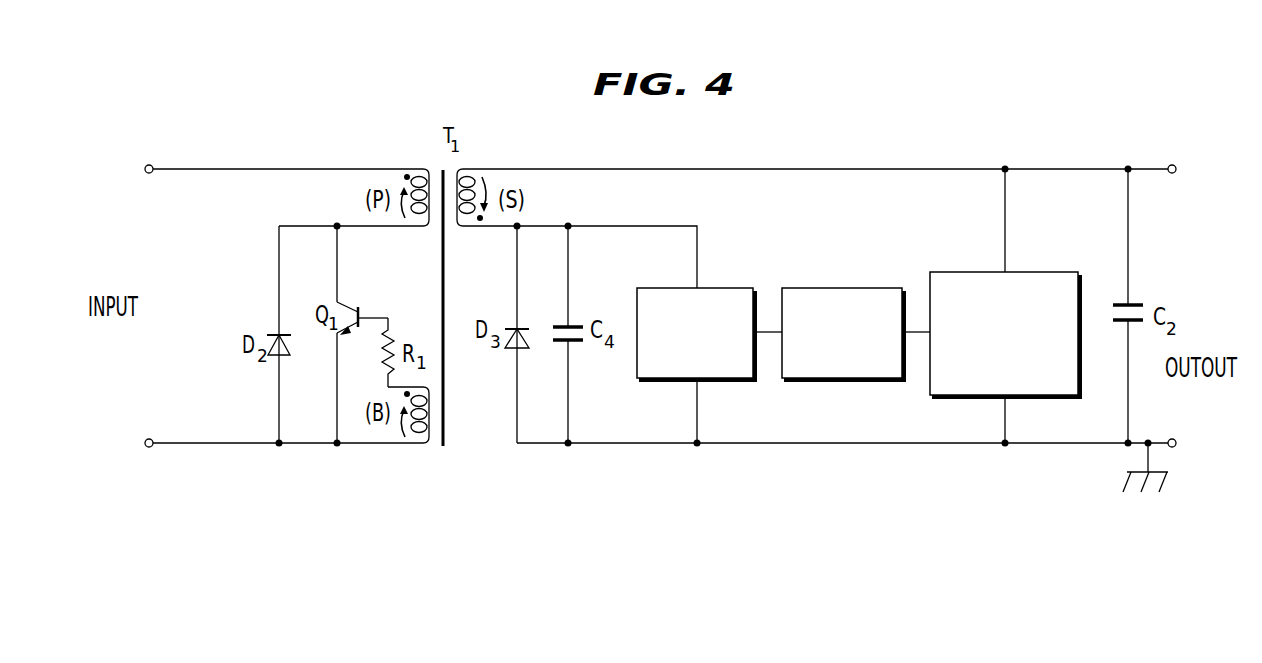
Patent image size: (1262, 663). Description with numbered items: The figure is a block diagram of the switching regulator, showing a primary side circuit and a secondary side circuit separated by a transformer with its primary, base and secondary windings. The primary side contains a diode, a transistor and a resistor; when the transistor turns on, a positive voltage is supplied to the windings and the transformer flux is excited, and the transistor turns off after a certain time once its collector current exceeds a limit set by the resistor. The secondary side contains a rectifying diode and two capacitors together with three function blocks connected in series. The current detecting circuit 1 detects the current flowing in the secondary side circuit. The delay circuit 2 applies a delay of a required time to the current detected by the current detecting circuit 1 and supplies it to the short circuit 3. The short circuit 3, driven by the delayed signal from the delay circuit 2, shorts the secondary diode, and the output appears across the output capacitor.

The current detecting circuit 1 is at (1062, 283).
The delay circuit 2 is at (851, 291).
The short circuit 3 is at (736, 291).